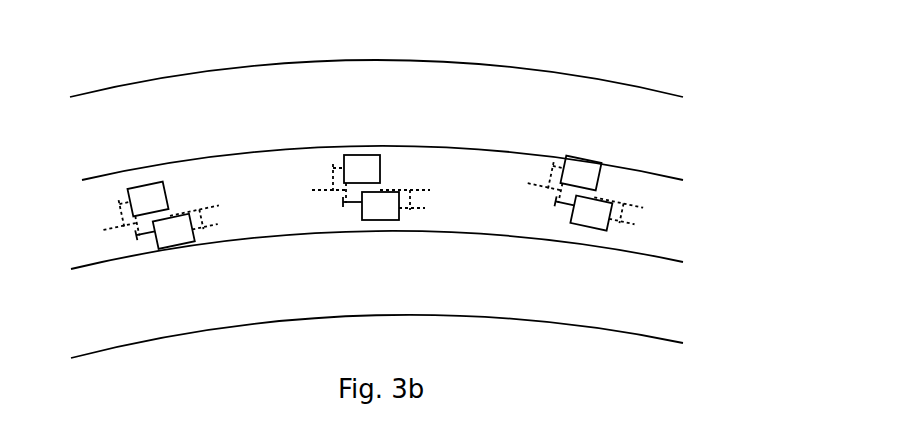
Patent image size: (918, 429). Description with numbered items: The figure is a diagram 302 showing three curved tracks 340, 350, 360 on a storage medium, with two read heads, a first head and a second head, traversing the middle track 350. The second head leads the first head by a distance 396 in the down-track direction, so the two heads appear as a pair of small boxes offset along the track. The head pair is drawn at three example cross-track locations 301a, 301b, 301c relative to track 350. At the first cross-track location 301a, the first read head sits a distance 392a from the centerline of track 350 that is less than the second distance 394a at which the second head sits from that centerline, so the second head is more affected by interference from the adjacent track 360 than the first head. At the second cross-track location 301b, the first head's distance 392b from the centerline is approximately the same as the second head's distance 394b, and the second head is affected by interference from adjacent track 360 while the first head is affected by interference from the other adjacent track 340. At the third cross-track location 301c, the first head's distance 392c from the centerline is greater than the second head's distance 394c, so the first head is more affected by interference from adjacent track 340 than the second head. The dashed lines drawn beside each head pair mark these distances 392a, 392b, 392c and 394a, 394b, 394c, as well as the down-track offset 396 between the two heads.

The diagram 302 is at (739, 67).
The first cross-track location 301a is at (188, 147).
The second cross-track location 301b is at (386, 131).
The third cross-track location 301c is at (596, 147).
The track 340 is at (400, 120).
The track 350 is at (401, 237).
The track 360 is at (402, 326).
The distance 392a is at (120, 214).
The distance 392b is at (333, 171).
The distance 392c is at (550, 174).
The second distance 394a is at (201, 220).
The second distance 394b is at (412, 202).
The second distance 394c is at (622, 214).
The distance 396 is at (134, 237).